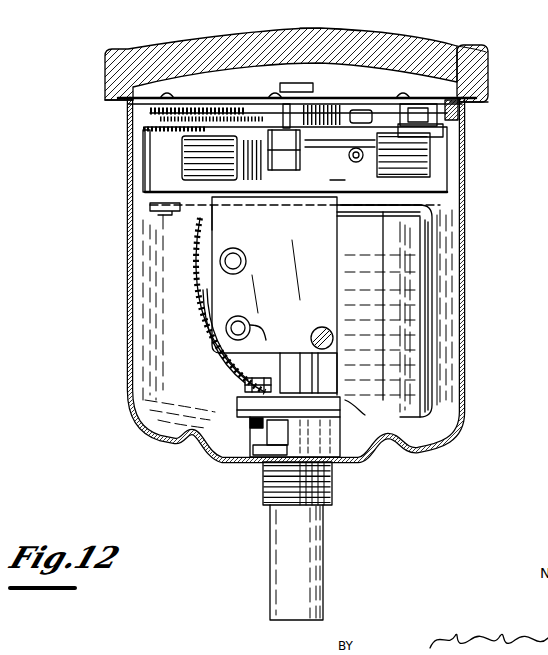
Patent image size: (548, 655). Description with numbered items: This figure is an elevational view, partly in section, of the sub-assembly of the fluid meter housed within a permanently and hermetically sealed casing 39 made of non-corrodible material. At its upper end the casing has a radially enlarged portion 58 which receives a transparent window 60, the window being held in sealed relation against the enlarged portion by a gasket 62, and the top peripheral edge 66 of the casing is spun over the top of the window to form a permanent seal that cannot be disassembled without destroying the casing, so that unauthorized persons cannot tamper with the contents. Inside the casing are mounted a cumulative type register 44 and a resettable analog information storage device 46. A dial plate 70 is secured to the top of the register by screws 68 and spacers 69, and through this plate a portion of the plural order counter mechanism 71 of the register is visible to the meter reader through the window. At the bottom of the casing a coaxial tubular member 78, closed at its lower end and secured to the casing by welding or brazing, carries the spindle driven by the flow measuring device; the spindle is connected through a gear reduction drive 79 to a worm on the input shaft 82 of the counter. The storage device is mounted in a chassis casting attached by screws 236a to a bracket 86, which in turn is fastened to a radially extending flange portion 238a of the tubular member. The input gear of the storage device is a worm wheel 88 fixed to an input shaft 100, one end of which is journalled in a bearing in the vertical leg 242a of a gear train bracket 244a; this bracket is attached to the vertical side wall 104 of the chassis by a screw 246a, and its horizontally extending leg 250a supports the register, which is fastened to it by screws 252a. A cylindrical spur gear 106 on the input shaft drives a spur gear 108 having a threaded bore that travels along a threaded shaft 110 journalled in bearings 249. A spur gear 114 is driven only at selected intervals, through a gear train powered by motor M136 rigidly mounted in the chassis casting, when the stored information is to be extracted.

The transparent window 60 is at (358, 57).
The top peripheral edge 66 is at (447, 49).
The radially enlarged portion 58 is at (489, 70).
The screws 68 is at (168, 94).
The spacers 69 is at (133, 100).
The dial plate 70 is at (348, 98).
The plural order counter mechanism 71 is at (352, 118).
The gasket 62 is at (474, 101).
The screws 252a is at (415, 118).
The horizontally extending leg 250a is at (444, 137).
The input shaft 82 is at (398, 161).
The hermetically sealed casing 39 is at (464, 254).
The motor M136 is at (433, 349).
The cumulative type register 44 is at (147, 118).
The helical gear or worm wheel 88 is at (210, 224).
The gear reduction drive 79 is at (322, 189).
The cylindrical spur gear 106 is at (197, 250).
The analog type information storage device 46 is at (186, 262).
The input shaft 100 is at (244, 264).
The vertical side wall 104 is at (242, 303).
The spur gear 108 is at (199, 303).
The spur gear 114 is at (183, 338).
The threaded shaft 110 is at (250, 323).
The bearings 249 is at (250, 329).
The gear train bracket 244a is at (313, 237).
The vertical leg 242a is at (336, 280).
The screw 246a is at (333, 338).
The bracket 86 is at (337, 388).
The screws 236a is at (234, 391).
The radially extending flange portion 238a is at (254, 454).
The tubular member 78 is at (290, 534).